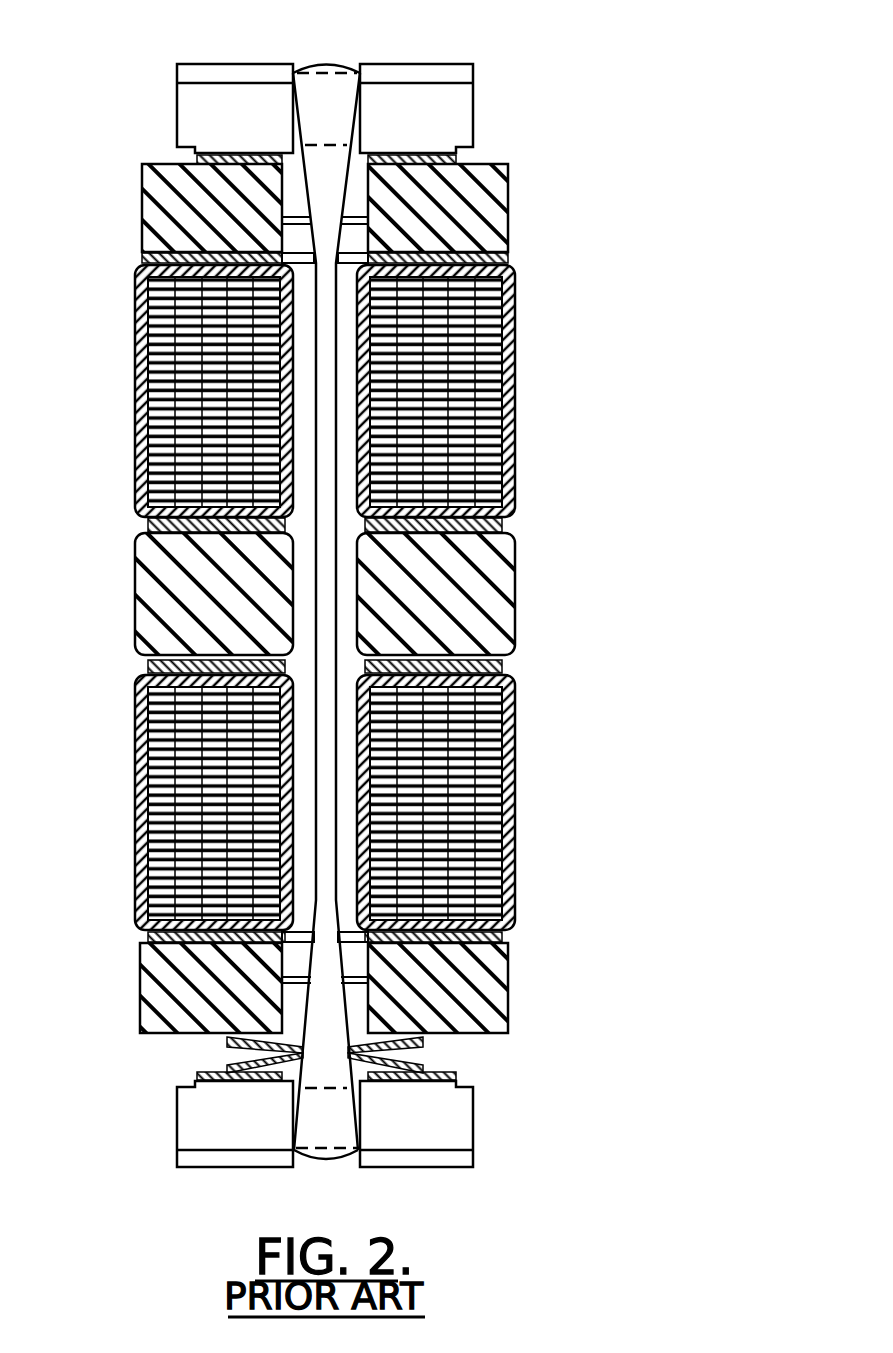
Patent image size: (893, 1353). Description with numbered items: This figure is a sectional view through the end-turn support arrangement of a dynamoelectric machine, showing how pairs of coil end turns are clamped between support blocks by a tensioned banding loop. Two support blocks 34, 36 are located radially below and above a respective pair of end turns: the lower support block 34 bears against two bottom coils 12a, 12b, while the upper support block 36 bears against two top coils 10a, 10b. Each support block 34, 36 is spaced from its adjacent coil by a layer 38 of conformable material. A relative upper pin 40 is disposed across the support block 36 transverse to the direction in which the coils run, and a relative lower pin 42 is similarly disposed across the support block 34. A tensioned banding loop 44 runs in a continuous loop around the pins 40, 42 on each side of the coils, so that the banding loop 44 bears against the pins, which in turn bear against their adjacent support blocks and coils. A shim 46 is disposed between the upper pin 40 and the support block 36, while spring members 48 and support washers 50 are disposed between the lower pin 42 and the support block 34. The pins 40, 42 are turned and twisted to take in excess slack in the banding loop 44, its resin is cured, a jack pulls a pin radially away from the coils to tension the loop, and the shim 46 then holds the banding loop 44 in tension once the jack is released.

The top coil 10a is at (515, 377).
The top coil 10b is at (137, 452).
The bottom coil 12a is at (513, 825).
The bottom coil 12b is at (158, 795).
The support block 34 is at (492, 1005).
The support block 36 is at (470, 233).
The layer of conformable material 38 is at (140, 200).
The upper pin 40 is at (187, 97).
The lower pin 42 is at (198, 1123).
The banding loop 44 is at (327, 607).
The shim 46 is at (450, 157).
The spring member 48 is at (440, 1067).
The support washer 50 is at (197, 1073).